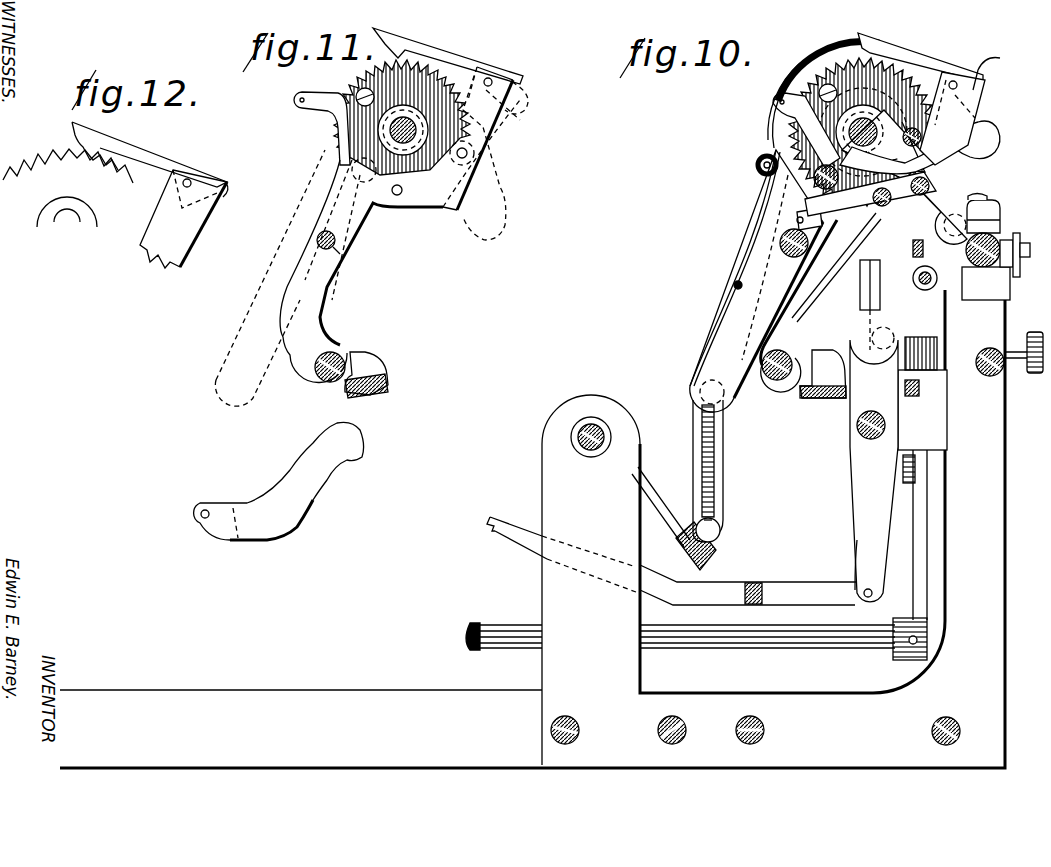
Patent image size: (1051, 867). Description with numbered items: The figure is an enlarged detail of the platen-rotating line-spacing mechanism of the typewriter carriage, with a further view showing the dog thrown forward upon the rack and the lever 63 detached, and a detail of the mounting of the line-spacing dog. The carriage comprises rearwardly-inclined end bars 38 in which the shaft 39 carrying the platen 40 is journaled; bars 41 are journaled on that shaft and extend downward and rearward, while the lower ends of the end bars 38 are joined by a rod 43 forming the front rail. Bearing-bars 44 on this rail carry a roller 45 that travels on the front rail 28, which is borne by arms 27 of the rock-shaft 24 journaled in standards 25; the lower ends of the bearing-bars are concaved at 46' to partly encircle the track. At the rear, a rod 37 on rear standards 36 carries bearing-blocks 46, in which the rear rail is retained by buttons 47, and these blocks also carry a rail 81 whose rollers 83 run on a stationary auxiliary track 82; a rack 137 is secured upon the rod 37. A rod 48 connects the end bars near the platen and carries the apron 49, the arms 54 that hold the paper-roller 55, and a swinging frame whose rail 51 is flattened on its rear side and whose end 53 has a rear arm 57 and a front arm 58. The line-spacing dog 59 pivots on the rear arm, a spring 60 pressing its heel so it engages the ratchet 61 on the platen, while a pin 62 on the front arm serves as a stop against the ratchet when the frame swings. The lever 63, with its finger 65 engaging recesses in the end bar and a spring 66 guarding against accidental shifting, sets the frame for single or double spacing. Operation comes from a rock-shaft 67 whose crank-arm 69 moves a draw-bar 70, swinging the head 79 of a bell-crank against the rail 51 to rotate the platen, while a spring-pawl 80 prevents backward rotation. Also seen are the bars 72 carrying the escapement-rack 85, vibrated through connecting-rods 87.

In FIG. 10, the rock-shaft 24 is at (579, 437).
In FIG. 10, the standards 25 is at (561, 568).
In FIG. 10, the arms 27 is at (674, 518).
In FIG. 10, the front rail 28 is at (722, 532).
In FIG. 10, the rear standards 36 is at (1005, 495).
In FIG. 10, the rod 37 is at (986, 321).
In FIG. 11, the end bars 38 is at (270, 340).
In FIG. 10, the end bars 38 is at (756, 281).
In FIG. 10, the shaft 39 is at (820, 60).
In FIG. 10, the platen 40 is at (800, 95).
In FIG. 11, the bars 41 is at (481, 153).
In FIG. 10, the bars 41 is at (880, 142).
In FIG. 10, the rod 43 is at (726, 398).
In FIG. 10, the bearing-bars 44 is at (724, 471).
In FIG. 10, the roller 45 is at (716, 490).
In FIG. 10, the bearing-blocks 46 is at (997, 237).
In FIG. 10, the concaved lower ends 46' is at (730, 511).
In FIG. 10, the buttons 47 is at (996, 205).
In FIG. 11, the rod 48 is at (344, 252).
In FIG. 10, the rod 48 is at (779, 243).
In FIG. 10, the apron 49 is at (995, 70).
In FIG. 11, the rail 51 is at (340, 355).
In FIG. 10, the rail 51 is at (790, 356).
In FIG. 11, the end 53 is at (361, 270).
In FIG. 10, the end 53 is at (799, 306).
In FIG. 10, the arms 54 is at (768, 197).
In FIG. 10, the paper-roller 55 is at (752, 167).
In FIG. 12, the rear arm 57 is at (183, 219).
In FIG. 11, the rear arm 57 is at (481, 138).
In FIG. 10, the rear arm 57 is at (944, 118).
In FIG. 11, the front arm 58 is at (297, 105).
In FIG. 12, the line-spacing dog 59 is at (149, 154).
In FIG. 11, the line-spacing dog 59 is at (448, 56).
In FIG. 10, the line-spacing dog 59 is at (920, 57).
In FIG. 12, the spring 60 is at (222, 200).
In FIG. 11, the spring 60 is at (529, 93).
In FIG. 12, the ratchet 61 is at (60, 188).
In FIG. 11, the ratchet 61 is at (372, 86).
In FIG. 10, the ratchet 61 is at (848, 150).
In FIG. 11, the pin 62 is at (355, 94).
In FIG. 10, the pin 62 is at (828, 83).
In FIG. 11, the lever 63 is at (279, 481).
In FIG. 10, the lever 63 is at (999, 135).
In FIG. 10, the finger 65 is at (866, 197).
In FIG. 10, the spring 66 is at (836, 267).
In FIG. 10, the rock-shaft 67 is at (696, 646).
In FIG. 10, the crank-arm 69 is at (884, 565).
In FIG. 10, the draw-bar 70 is at (947, 458).
In FIG. 10, the bars 72 is at (874, 464).
In FIG. 11, the head 79 is at (378, 372).
In FIG. 10, the head 79 is at (823, 374).
In FIG. 10, the spring-pawl 80 is at (784, 218).
In FIG. 10, the rail 81 is at (862, 295).
In FIG. 10, the auxiliary track 82 is at (925, 278).
In FIG. 10, the rollers 83 is at (917, 239).
In FIG. 10, the escapement-rack 85 is at (866, 315).
In FIG. 10, the connecting-rods 87 is at (749, 584).
In FIG. 10, the rack 137 is at (1025, 303).